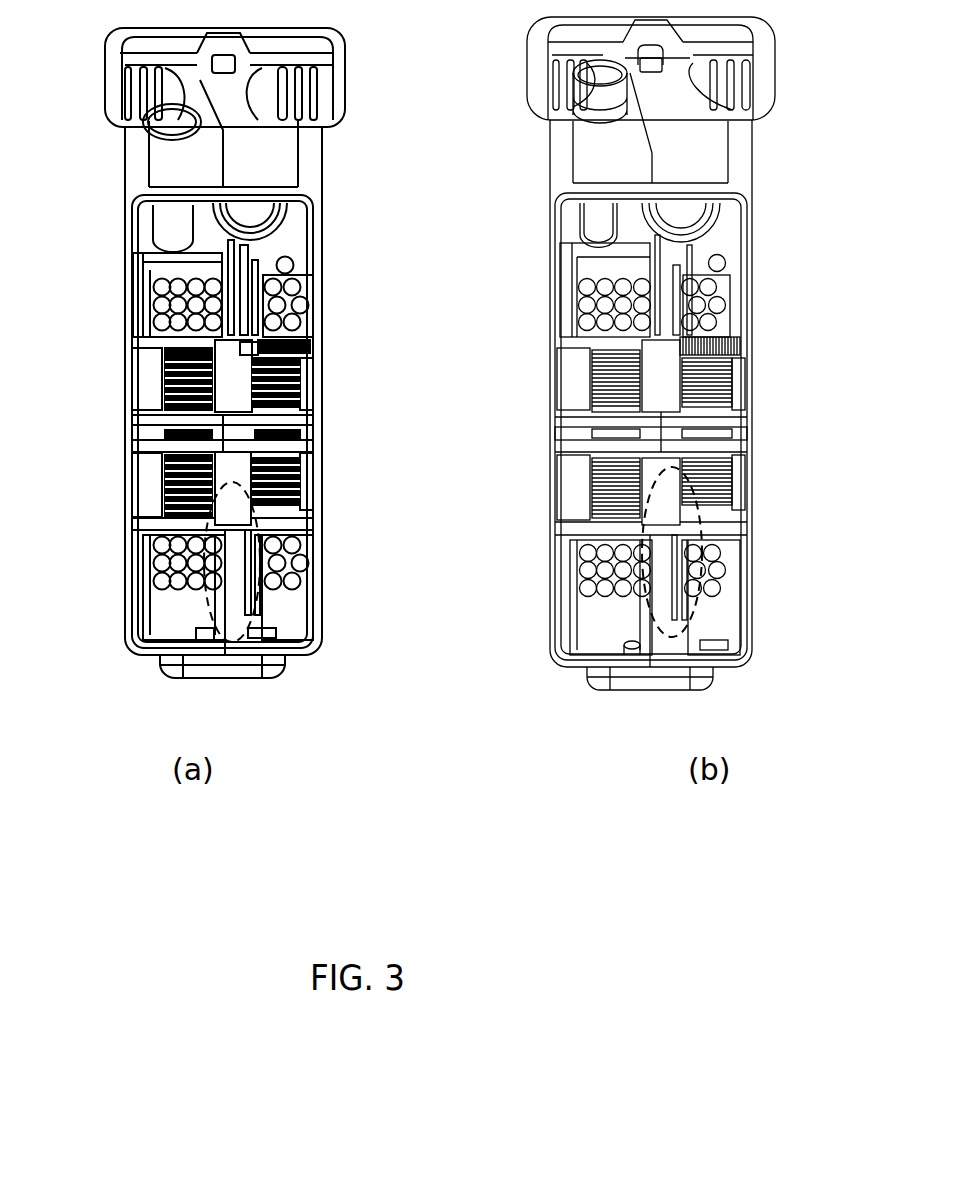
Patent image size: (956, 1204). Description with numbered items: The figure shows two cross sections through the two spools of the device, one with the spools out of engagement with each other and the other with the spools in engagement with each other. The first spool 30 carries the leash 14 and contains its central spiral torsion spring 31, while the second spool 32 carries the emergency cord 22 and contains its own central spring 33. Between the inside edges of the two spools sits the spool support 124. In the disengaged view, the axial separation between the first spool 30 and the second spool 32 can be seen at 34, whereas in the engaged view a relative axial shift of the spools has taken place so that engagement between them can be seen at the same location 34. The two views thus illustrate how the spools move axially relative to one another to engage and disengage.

The leash 14 is at (344, 391).
The emergency cord 22 is at (521, 233).
The first spool 30 is at (344, 290).
The central spiral torsion spring 31 is at (339, 362).
The second spool 32 is at (546, 426).
The central spring 33 is at (540, 374).
The axial separation / engagement region 34 is at (518, 595).
The spool support 124 is at (447, 376).